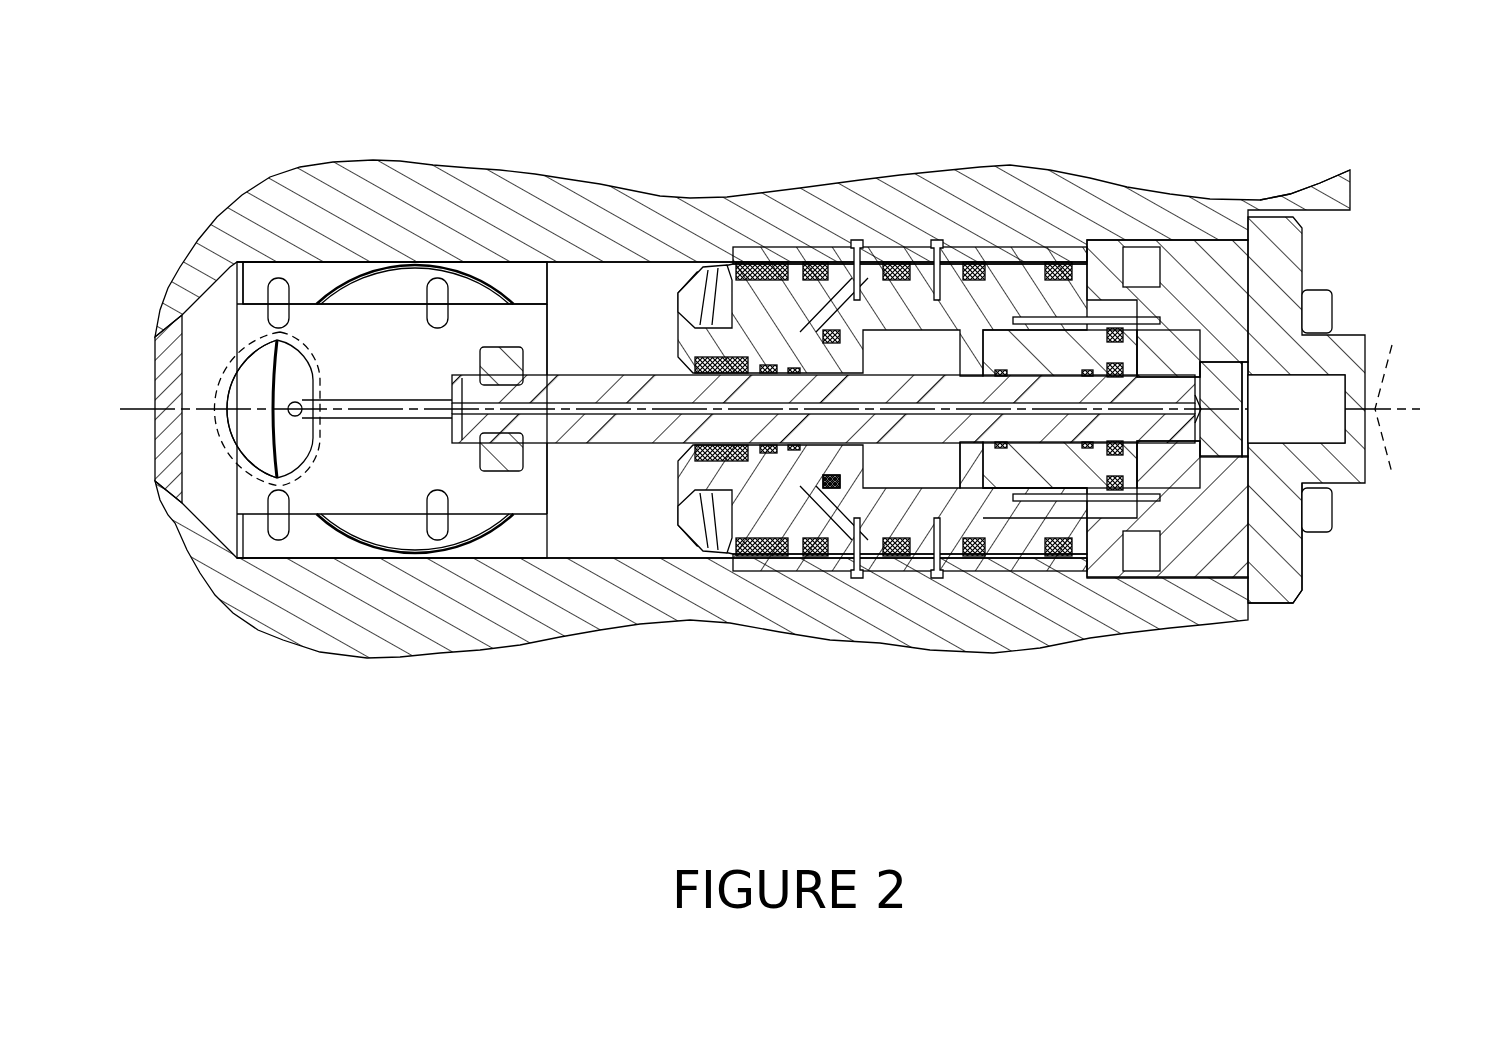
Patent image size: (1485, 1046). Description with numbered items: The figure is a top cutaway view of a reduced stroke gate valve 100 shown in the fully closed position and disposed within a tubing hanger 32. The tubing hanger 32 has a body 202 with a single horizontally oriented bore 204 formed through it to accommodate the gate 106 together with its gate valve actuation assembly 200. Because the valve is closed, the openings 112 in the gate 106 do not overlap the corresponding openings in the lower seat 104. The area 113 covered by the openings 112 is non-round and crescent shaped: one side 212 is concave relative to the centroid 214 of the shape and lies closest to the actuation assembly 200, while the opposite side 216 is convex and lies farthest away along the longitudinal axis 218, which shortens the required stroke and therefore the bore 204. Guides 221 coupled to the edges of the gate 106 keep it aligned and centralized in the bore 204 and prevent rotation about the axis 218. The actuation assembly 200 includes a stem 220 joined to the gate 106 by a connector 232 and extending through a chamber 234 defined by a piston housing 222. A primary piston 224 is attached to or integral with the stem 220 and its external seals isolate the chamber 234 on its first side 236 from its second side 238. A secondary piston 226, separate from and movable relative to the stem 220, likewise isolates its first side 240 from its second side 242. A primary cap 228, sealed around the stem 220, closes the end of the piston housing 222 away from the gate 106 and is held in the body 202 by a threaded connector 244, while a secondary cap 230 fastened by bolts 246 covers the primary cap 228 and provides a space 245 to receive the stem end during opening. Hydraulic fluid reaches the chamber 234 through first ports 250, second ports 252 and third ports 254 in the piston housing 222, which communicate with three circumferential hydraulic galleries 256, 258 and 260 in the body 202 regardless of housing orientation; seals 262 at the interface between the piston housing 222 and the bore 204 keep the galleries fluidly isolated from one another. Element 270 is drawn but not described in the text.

The tubing hanger 32 is at (1322, 105).
The gate valve 100 is at (752, 208).
The lower seat 104 is at (647, 501).
The gate 106 is at (389, 217).
The openings 112 is at (161, 376).
The area 113 is at (216, 342).
The gate valve actuation assembly 200 is at (770, 592).
The body 202 is at (701, 628).
The bore 204 is at (392, 336).
The concave side 212 is at (350, 486).
The centroid 214 is at (213, 481).
The convex side 216 is at (201, 456).
The axis 218 is at (1423, 398).
The stem 220 is at (751, 558).
The guides 221 is at (304, 411).
The piston housing 222 is at (882, 486).
The primary piston 224 is at (907, 343).
The secondary piston 226 is at (1302, 410).
The primary cap 228 is at (1300, 517).
The secondary cap 230 is at (1359, 560).
The connector 232 is at (547, 540).
The chamber 234 is at (1071, 245).
The first side 236 is at (625, 334).
The second side 238 is at (899, 591).
The first side 240 is at (1189, 246).
The second side 242 is at (1203, 592).
The threaded connector 244 is at (1248, 519).
The bore or space 245 is at (1359, 366).
The bolts 246 is at (1386, 412).
The first ports 250 is at (710, 335).
The second ports 252 is at (1001, 610).
The third ports 254 is at (1111, 601).
The hydraulic gallery 256 is at (882, 609).
The hydraulic gallery 258 is at (1032, 592).
The hydraulic gallery 260 is at (1081, 615).
The seals 262 is at (1015, 410).
The small seals 270 is at (984, 281).